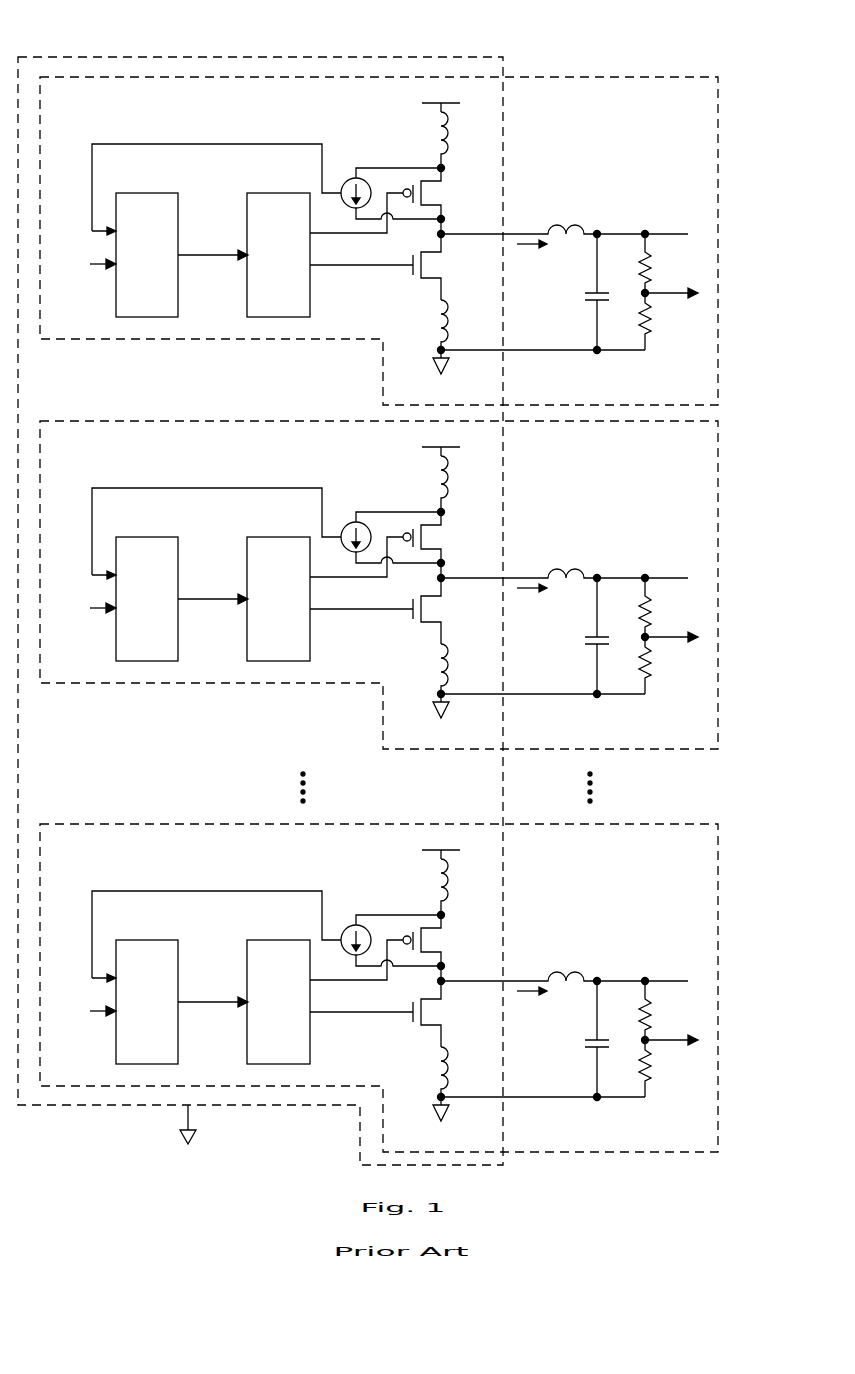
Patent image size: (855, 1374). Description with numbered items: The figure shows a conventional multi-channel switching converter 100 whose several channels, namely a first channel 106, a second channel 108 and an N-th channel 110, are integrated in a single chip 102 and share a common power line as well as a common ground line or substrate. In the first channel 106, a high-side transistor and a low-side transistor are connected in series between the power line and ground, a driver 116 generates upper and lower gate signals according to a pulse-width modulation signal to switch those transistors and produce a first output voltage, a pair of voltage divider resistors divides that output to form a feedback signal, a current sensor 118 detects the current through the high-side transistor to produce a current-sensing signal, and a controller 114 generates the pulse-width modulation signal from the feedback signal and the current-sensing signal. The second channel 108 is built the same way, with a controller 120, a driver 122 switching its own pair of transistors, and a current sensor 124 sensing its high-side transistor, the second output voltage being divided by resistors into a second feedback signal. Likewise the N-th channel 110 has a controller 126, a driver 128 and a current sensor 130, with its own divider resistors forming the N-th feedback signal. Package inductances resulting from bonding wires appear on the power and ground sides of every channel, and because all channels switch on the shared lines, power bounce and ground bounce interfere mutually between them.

The multi-channel switching converter 100 is at (753, 57).
The single chip 102 is at (457, 56).
The first channel 106 is at (718, 246).
The second channel 108 is at (411, 585).
The N-th channel 110 is at (411, 988).
The controller 114 is at (147, 193).
The driver 116 is at (278, 193).
The current sensor 118 is at (351, 177).
The controller 120 is at (147, 580).
The driver 122 is at (278, 580).
The current sensor 124 is at (351, 508).
The controller 126 is at (147, 983).
The driver 128 is at (278, 983).
The current sensor 130 is at (351, 911).